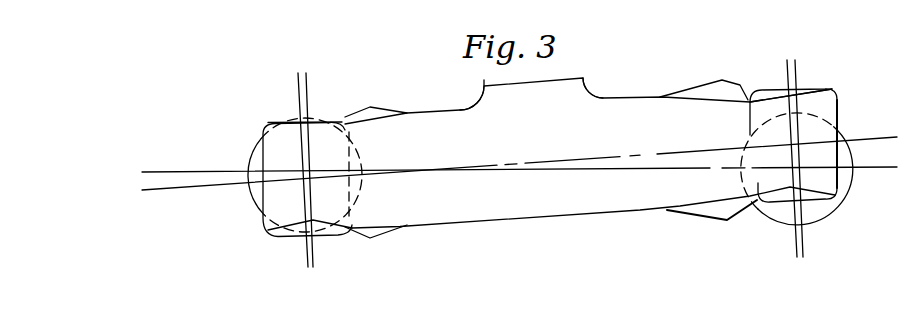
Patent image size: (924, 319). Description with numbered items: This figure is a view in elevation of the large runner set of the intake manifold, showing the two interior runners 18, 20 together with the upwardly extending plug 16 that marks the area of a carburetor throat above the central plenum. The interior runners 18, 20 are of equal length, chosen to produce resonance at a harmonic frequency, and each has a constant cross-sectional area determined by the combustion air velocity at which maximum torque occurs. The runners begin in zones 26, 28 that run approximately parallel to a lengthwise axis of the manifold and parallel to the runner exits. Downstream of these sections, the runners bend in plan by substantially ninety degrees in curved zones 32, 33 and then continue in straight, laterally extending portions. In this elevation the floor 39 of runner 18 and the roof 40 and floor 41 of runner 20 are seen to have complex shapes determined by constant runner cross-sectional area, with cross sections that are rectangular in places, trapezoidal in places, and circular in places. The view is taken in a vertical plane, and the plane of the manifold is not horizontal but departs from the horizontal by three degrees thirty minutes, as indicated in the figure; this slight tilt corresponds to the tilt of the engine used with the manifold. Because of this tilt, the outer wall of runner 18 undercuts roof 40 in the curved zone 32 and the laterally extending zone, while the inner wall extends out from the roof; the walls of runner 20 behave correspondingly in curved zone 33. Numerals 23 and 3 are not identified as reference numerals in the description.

The plug 16 is at (557, 77).
The interior runner 18 is at (264, 128).
The interior runner 20 is at (832, 89).
The right shoulder 23 is at (603, 108).
The zone 26 is at (442, 116).
The zone 28 is at (380, 107).
The curved zone 32 is at (325, 140).
The curved zone 33 is at (727, 112).
The floor 39 is at (380, 232).
The roof 40 is at (708, 87).
The floor 41 is at (728, 211).
The angle dimension 3 deg 30 min 3 is at (221, 211).